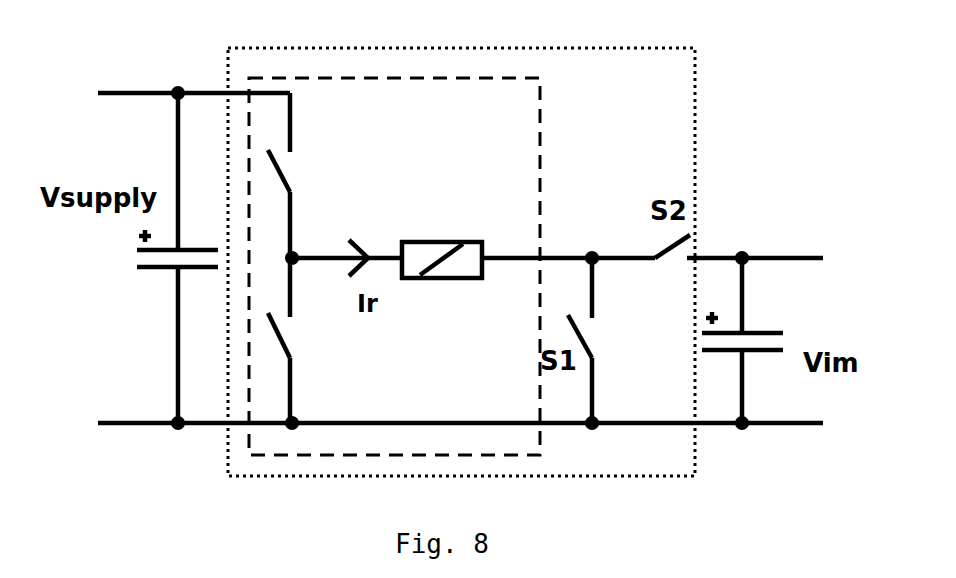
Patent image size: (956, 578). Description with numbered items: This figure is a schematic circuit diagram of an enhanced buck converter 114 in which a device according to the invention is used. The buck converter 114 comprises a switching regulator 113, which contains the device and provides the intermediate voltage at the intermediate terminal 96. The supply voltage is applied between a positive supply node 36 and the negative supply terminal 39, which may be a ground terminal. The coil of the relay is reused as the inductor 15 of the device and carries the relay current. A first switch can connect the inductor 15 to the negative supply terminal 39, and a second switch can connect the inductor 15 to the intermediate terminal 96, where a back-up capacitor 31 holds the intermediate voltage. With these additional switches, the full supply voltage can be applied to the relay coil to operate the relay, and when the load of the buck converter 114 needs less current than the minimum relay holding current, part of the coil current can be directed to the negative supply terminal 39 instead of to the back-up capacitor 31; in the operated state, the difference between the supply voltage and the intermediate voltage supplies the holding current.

The positive supply terminal node 36 is at (178, 86).
The negative supply terminal 39 is at (176, 432).
The intermediate terminal 96 is at (745, 249).
The back-up capacitor 31 is at (758, 330).
The inductor 15 is at (425, 257).
The switching regulator 113 is at (543, 119).
The enhanced buck converter 114 is at (575, 47).